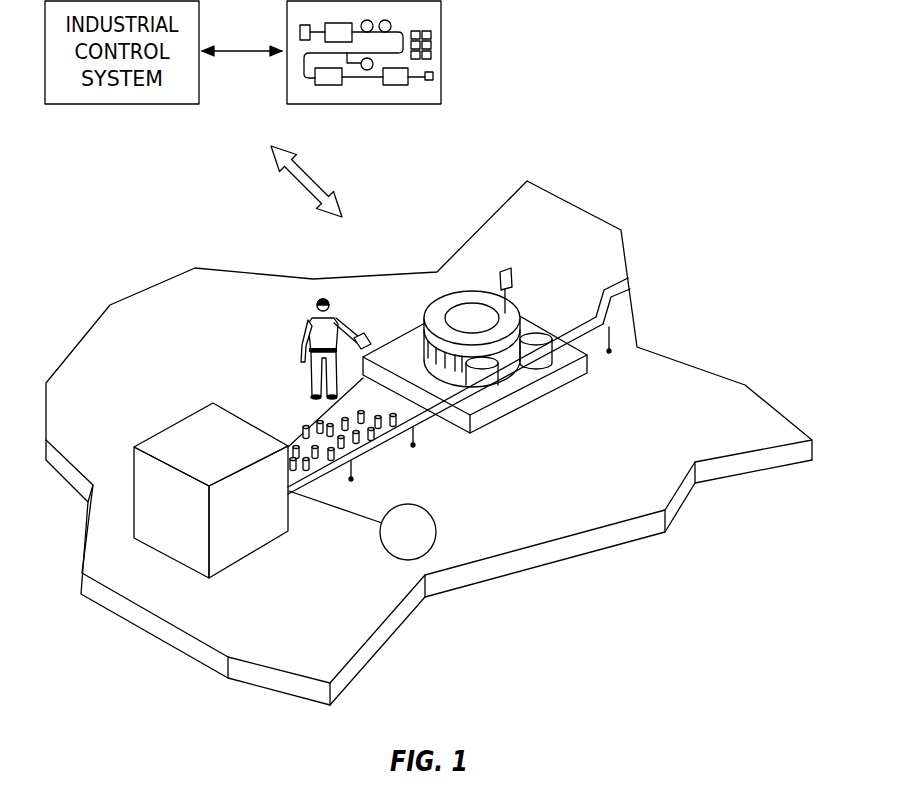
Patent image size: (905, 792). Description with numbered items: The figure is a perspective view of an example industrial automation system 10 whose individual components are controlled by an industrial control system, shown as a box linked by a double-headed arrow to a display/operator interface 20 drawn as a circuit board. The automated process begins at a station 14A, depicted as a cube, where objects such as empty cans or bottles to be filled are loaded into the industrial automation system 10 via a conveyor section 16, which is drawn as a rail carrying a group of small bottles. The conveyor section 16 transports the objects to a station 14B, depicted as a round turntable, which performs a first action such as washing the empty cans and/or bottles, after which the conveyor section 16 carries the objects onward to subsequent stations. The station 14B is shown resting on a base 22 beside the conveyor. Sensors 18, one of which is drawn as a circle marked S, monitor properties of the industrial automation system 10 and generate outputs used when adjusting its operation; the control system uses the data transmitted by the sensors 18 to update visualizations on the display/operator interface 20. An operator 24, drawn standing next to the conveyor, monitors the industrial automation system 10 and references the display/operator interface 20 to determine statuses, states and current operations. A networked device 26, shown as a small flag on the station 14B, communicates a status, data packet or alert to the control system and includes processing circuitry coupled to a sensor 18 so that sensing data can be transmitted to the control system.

The industrial automation system 10 is at (547, 660).
The station 14A is at (173, 420).
The station 14B is at (463, 307).
The conveyor section 16 is at (318, 420).
The sensor 18 is at (407, 504).
The display/operator interface 20 is at (442, 48).
The pallet / base 22 is at (530, 403).
The operator 24 is at (333, 318).
The networked device 26 is at (504, 270).